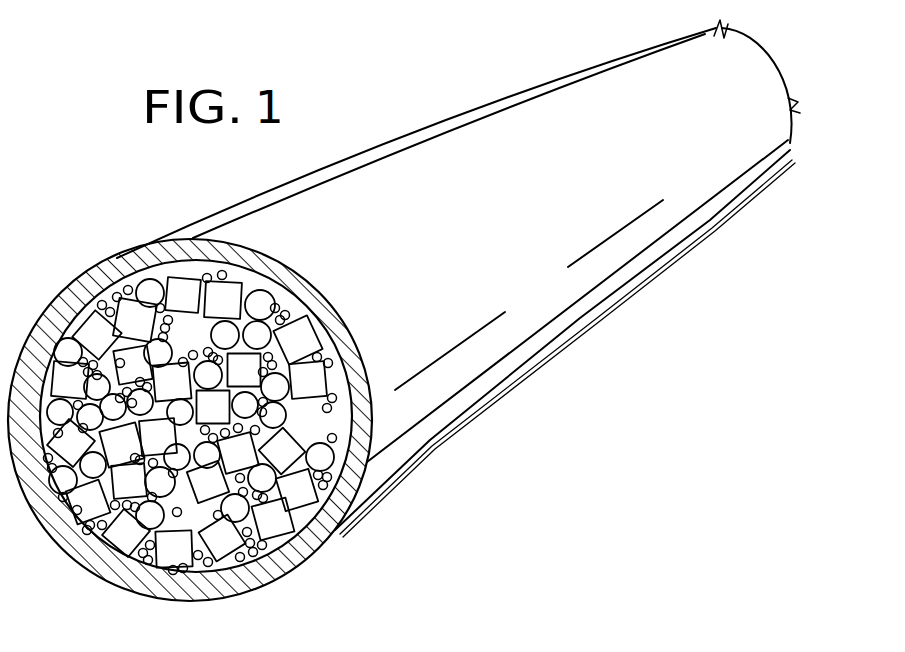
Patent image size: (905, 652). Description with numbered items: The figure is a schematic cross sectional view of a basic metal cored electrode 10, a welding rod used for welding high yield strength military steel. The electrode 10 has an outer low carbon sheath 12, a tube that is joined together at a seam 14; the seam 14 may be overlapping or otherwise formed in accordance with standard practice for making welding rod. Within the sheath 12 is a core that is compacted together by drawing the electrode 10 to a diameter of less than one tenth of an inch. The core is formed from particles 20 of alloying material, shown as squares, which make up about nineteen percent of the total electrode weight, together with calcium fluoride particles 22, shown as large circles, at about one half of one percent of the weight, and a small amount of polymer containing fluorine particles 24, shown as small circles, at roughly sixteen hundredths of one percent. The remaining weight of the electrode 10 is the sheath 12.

The basic metal cored electrode 10 is at (400, 166).
The outer low carbon sheath 12 is at (310, 547).
The seam 14 is at (220, 237).
The particles of alloying material 20 is at (322, 377).
The calcium fluoride particles 22 is at (258, 337).
The polymer containing fluorine particles 24 is at (117, 295).